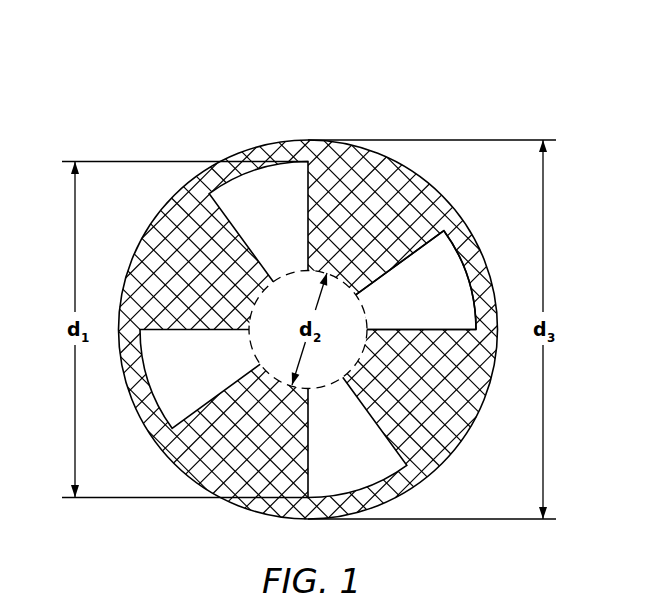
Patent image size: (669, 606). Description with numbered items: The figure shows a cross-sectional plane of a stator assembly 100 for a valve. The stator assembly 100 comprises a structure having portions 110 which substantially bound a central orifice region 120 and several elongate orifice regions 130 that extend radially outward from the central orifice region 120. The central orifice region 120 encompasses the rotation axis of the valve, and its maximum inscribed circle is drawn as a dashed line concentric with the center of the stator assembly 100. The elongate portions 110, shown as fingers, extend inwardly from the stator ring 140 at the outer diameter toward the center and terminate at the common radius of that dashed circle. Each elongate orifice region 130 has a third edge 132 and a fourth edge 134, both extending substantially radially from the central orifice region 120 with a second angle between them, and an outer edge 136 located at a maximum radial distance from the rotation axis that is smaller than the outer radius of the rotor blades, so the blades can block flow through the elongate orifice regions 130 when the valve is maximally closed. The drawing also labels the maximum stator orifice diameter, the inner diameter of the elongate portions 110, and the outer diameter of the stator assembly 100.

The stator assembly 100 is at (117, 85).
The elongate portions 110 is at (363, 218).
The central orifice region 120 is at (304, 312).
The elongate orifice regions 130 is at (301, 206).
The third edge 132 is at (445, 230).
The fourth edge 134 is at (392, 328).
The outer edge 136 is at (462, 257).
The stator ring 140 is at (263, 152).